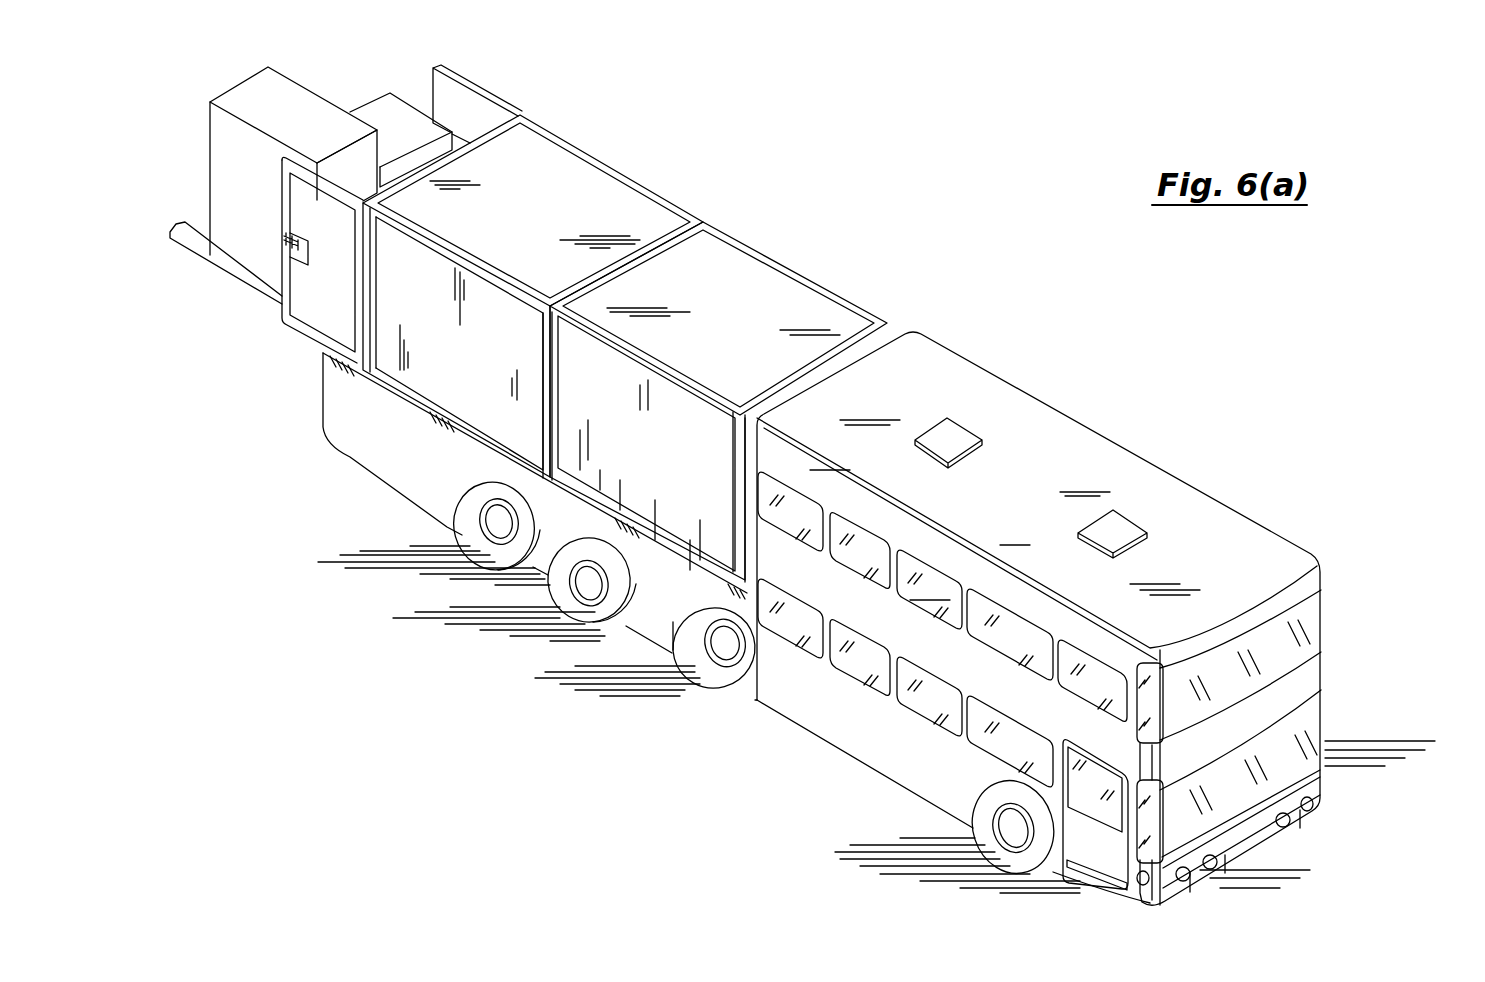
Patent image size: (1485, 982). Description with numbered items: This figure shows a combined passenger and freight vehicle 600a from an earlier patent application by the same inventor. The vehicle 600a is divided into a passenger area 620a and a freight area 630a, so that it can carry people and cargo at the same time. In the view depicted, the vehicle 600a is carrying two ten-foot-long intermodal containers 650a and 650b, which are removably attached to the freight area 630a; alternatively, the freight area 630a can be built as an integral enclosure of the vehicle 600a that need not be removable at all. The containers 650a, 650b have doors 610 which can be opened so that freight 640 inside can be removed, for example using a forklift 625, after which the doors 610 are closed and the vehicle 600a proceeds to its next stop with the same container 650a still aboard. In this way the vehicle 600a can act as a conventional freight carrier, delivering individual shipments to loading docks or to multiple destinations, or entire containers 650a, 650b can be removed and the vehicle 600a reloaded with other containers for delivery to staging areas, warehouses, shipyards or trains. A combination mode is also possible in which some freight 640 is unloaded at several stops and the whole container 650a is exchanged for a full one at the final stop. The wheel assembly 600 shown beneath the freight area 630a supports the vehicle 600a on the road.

The wheel 600 is at (715, 676).
The vehicle 600a is at (1160, 422).
The doors 610 is at (487, 97).
The passenger area 620a is at (863, 722).
The forklift 625 is at (197, 238).
The freight area 630a is at (390, 438).
The freight 640 is at (222, 140).
The intermodal container 650a is at (620, 180).
The intermodal container 650b is at (780, 267).